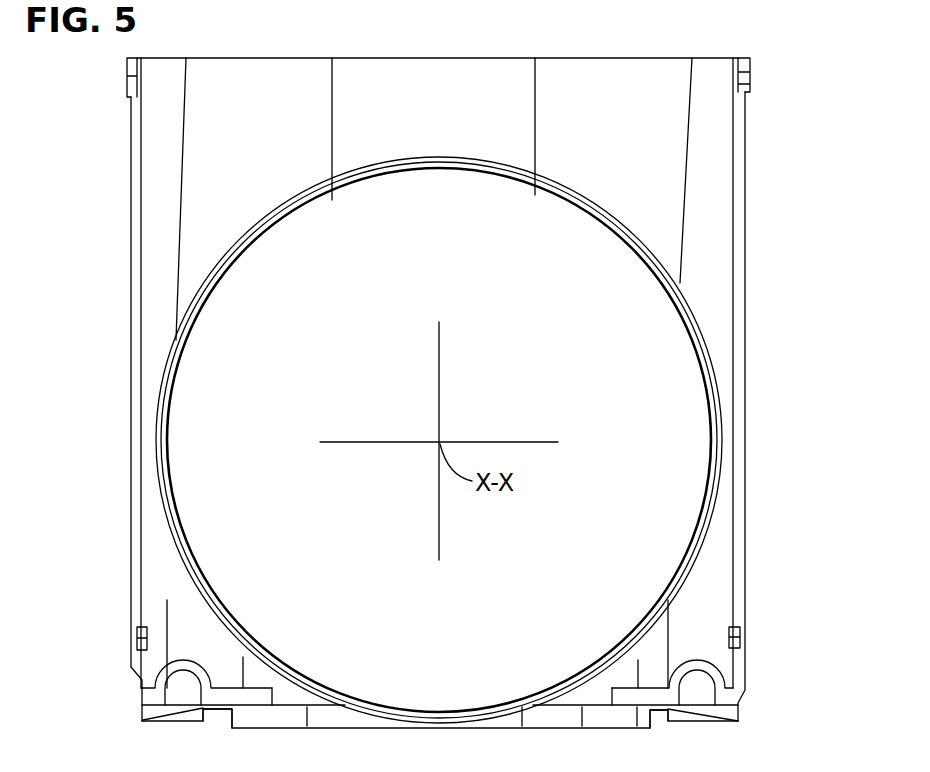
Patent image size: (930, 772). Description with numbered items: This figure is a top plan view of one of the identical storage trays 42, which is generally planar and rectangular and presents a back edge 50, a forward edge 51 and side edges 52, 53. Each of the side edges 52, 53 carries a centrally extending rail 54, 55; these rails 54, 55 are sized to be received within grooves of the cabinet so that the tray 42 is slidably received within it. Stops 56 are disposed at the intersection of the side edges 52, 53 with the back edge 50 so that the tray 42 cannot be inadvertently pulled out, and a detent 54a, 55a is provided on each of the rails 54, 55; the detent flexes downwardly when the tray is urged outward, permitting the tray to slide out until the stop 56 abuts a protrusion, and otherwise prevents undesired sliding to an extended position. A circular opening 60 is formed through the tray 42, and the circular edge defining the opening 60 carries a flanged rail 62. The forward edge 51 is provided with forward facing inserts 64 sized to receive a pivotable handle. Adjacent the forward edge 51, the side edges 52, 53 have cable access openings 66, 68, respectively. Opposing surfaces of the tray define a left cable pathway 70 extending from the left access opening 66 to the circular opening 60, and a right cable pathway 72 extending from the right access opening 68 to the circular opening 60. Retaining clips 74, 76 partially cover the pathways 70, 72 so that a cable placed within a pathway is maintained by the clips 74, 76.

The tray 42 is at (235, 50).
The back edge 50 is at (427, 58).
The forward edge 51 is at (535, 729).
The side edge 52 is at (131, 249).
The side edge 53 is at (748, 285).
The rail 54 is at (141, 494).
The rail 55 is at (747, 492).
The detent 54a is at (137, 638).
The detent 55a is at (745, 634).
The stop 56 is at (127, 78).
The circular opening 60 is at (270, 427).
The flanged rail 62 is at (168, 504).
The inserts 64 is at (226, 722).
The cable access opening 66 is at (153, 698).
The cable access opening 68 is at (742, 700).
The left cable pathway 70 is at (350, 684).
The right cable pathway 72 is at (592, 690).
The retaining clip 74 is at (222, 648).
The retaining clip 76 is at (715, 676).